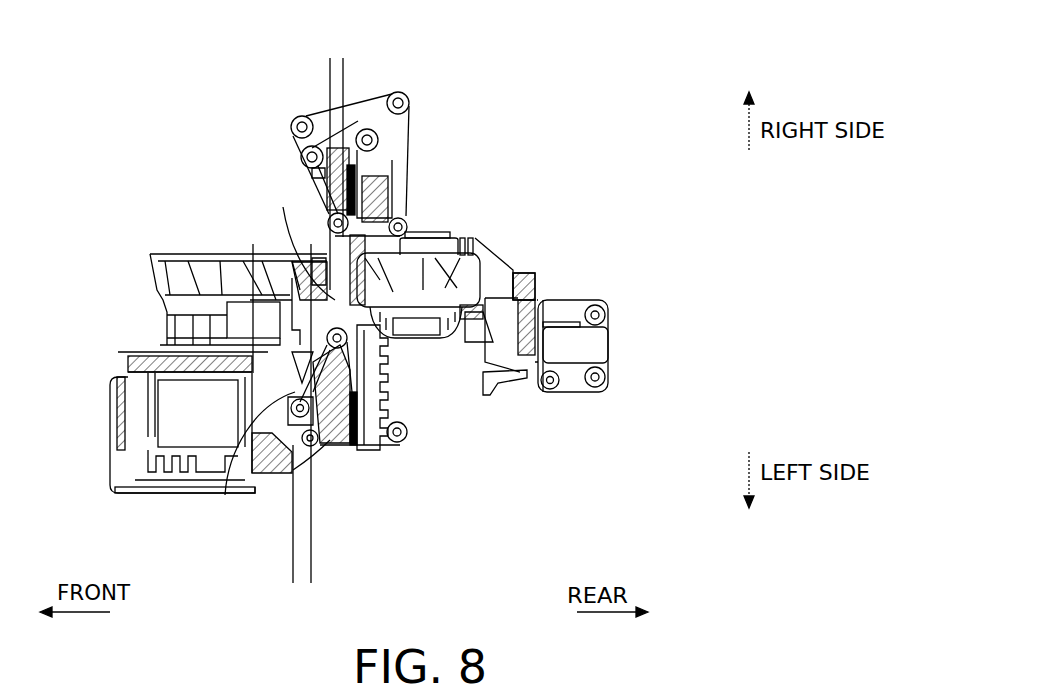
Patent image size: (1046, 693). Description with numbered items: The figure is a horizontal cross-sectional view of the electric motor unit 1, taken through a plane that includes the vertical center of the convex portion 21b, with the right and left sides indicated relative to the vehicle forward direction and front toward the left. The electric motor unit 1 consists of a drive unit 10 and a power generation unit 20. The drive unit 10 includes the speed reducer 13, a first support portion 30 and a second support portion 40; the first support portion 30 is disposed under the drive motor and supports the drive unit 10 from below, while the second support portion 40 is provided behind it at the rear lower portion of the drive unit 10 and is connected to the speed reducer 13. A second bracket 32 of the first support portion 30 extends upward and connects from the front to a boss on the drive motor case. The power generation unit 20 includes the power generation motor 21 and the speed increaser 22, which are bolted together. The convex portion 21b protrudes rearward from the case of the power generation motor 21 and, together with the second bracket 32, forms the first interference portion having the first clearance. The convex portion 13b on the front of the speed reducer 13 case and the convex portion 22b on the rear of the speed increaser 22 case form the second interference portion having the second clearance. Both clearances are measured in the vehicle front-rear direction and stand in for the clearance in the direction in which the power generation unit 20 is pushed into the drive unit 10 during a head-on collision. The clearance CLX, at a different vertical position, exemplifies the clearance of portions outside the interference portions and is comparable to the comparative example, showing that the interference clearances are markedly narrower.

The electric motor unit 1 is at (108, 100).
The drive unit 10 is at (523, 168).
The speed reducer 13 is at (457, 237).
The convex portion 13b is at (390, 212).
The power generation unit 20 is at (135, 220).
The power generation motor 21 is at (140, 414).
The convex portion 21b is at (278, 465).
The speed increaser 22 is at (150, 272).
The convex portion 22b is at (317, 247).
The first support portion 30 is at (344, 472).
The second bracket 32 is at (380, 450).
The second support portion 40 is at (630, 372).
The clearance CLX is at (327, 244).